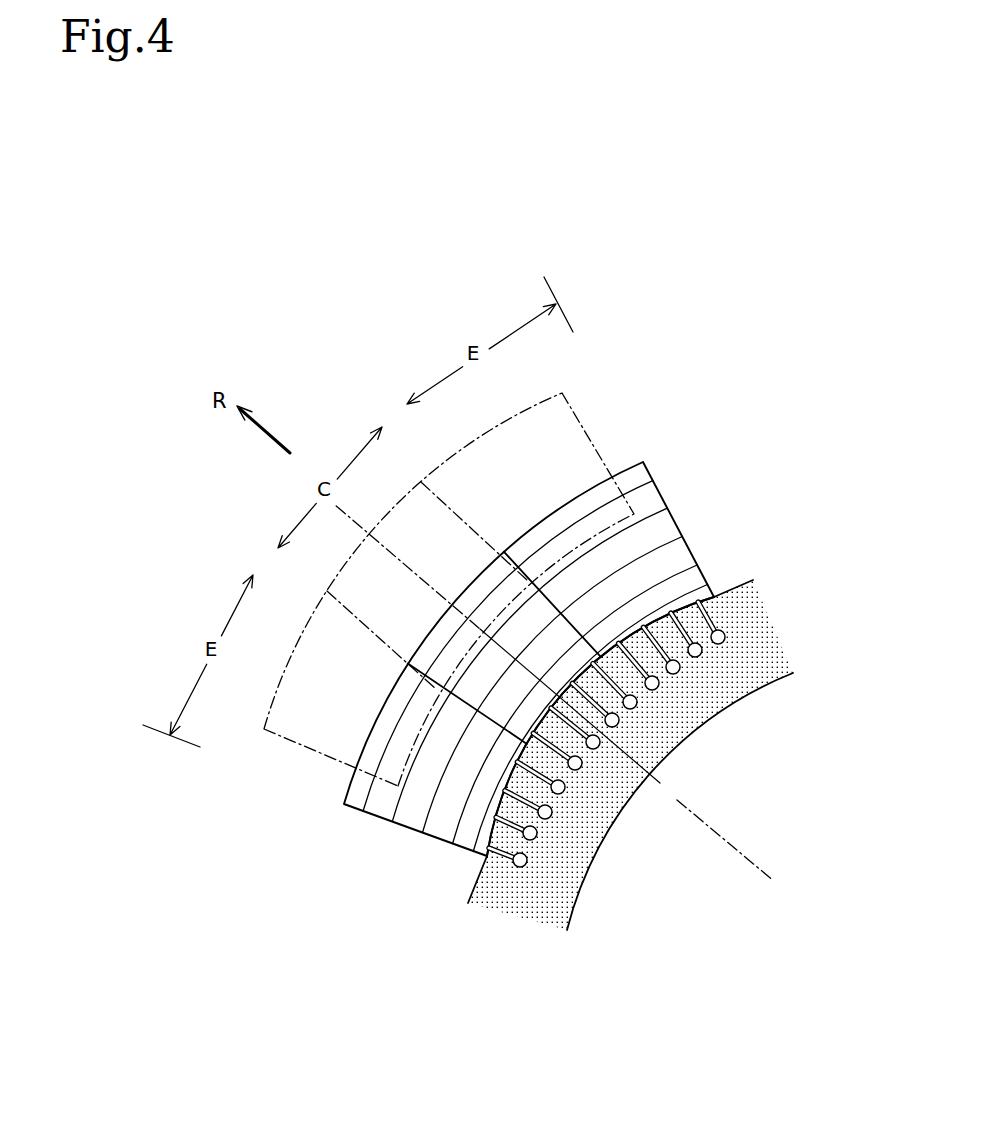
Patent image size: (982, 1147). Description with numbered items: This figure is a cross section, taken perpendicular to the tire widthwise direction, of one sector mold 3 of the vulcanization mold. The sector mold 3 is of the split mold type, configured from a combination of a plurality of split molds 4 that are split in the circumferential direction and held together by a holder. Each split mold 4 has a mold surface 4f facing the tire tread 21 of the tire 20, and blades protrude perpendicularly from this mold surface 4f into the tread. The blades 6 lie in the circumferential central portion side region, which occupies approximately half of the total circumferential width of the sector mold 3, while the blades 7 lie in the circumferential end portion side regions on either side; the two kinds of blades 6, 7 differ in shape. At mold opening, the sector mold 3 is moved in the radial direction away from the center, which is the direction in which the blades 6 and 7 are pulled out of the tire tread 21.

The sector mold 3 is at (360, 818).
The split mold 4 is at (615, 473).
The mold surface 4f is at (490, 858).
The blade 6 is at (660, 783).
The blade 7 is at (725, 645).
The tire tread 21 is at (636, 725).
The rotor 20 is at (735, 597).